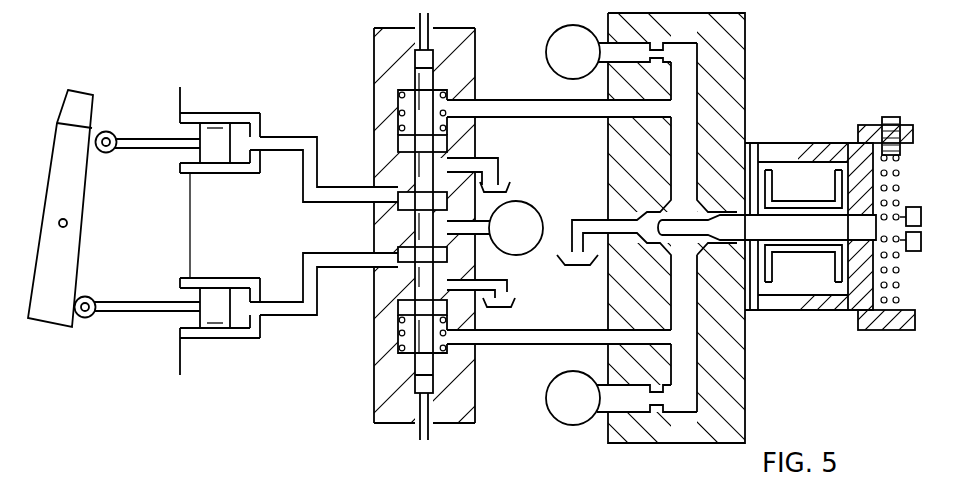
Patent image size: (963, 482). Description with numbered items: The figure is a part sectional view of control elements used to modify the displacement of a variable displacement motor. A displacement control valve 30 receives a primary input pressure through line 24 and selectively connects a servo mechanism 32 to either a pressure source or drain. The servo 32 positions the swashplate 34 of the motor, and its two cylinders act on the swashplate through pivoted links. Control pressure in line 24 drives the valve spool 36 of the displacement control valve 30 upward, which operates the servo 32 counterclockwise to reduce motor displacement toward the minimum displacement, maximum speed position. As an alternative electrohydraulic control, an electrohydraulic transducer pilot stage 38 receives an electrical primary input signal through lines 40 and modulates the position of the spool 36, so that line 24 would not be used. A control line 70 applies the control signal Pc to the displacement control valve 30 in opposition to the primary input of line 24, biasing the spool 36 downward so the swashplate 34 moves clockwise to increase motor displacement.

The line 24 is at (428, 438).
The displacement control valve 30 is at (358, 377).
The servo mechanism 32 is at (206, 254).
The swashplate 34 is at (66, 259).
The valve spool 36 is at (400, 206).
The electrohydraulic transducer pilot stage 38 is at (752, 130).
The lines 40 is at (776, 283).
The control line 70 is at (430, 23).